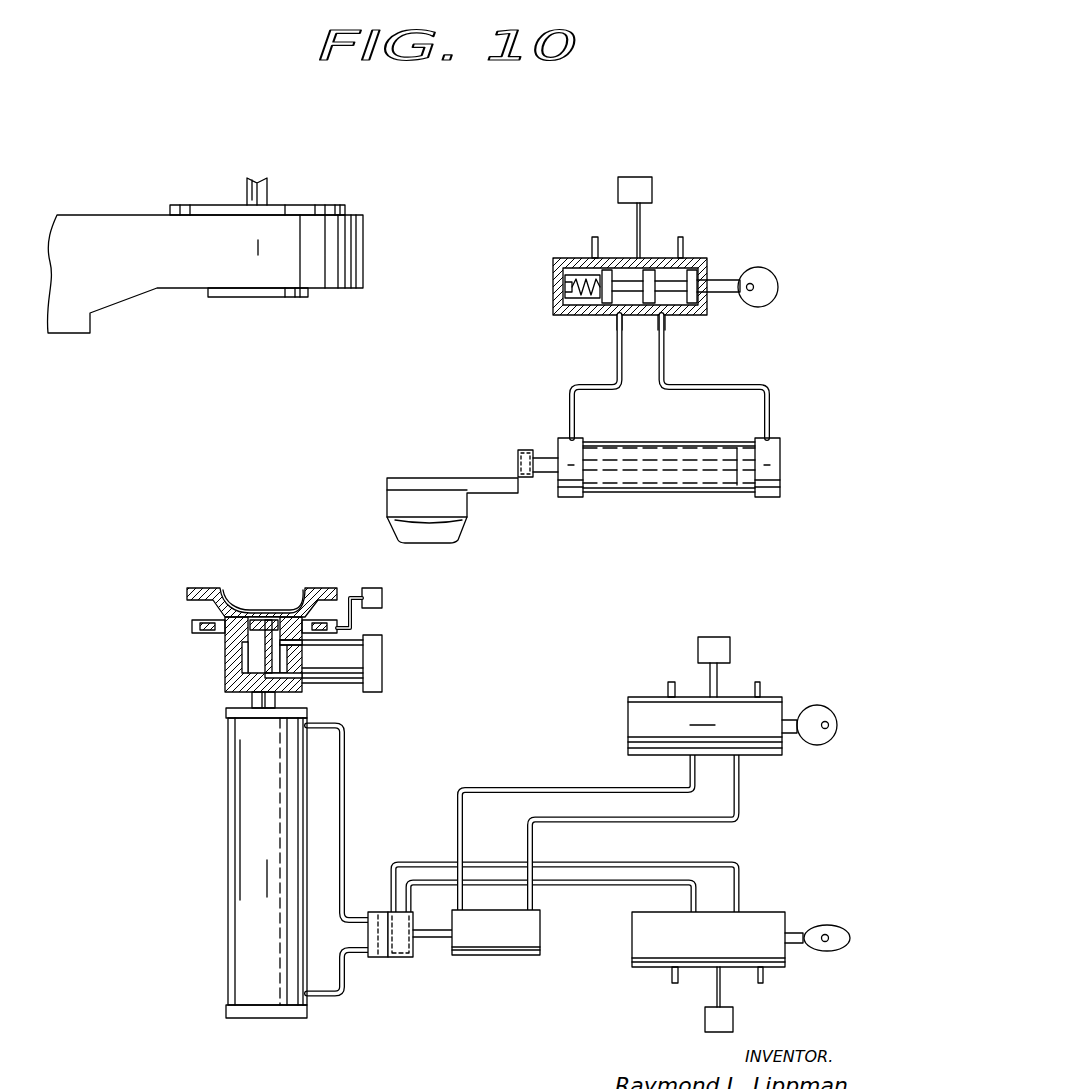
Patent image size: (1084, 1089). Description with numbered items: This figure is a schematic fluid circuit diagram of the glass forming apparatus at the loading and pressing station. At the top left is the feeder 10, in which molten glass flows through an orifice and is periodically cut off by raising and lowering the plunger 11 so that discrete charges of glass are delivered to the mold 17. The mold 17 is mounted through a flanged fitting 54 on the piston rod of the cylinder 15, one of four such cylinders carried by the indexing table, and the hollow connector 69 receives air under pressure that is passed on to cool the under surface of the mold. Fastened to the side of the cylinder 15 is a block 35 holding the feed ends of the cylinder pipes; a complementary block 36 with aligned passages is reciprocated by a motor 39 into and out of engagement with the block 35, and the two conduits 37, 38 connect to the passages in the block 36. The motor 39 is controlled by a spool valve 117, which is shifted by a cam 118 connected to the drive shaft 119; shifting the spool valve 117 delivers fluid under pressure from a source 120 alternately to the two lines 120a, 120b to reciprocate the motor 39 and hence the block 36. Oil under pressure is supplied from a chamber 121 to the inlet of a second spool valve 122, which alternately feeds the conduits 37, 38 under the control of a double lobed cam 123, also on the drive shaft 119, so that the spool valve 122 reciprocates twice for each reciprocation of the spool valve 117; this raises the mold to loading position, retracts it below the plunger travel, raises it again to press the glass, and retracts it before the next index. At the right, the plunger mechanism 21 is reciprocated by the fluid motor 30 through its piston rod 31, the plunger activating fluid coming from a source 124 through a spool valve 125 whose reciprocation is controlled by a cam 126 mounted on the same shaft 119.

The feeder 10 is at (368, 236).
The plunger 11 is at (262, 192).
The cylinder 15 is at (243, 821).
The mold 17 is at (205, 592).
The plunger mechanism 21 is at (438, 443).
The reciprocating fluid motor 30 is at (683, 480).
The piston rod 31 is at (542, 458).
The block 35 is at (378, 958).
The complementary block 36 is at (400, 958).
The conduit 37 is at (672, 851).
The conduit 38 is at (595, 888).
The motor 39 is at (500, 943).
The flanged fitting 54 is at (382, 664).
The hollow connector 69 is at (383, 597).
The spool valve 117 is at (762, 705).
The cam 118 is at (815, 742).
The drive shaft 119 is at (750, 292).
The source 120 is at (715, 650).
The line 120a is at (583, 790).
The line 120b is at (647, 812).
The chamber 121 is at (717, 1017).
The spool valve 122 is at (655, 953).
The double lobed cam 123 is at (838, 948).
The source 124 is at (650, 190).
The spool valve 125 is at (695, 260).
The cam 126 is at (765, 282).